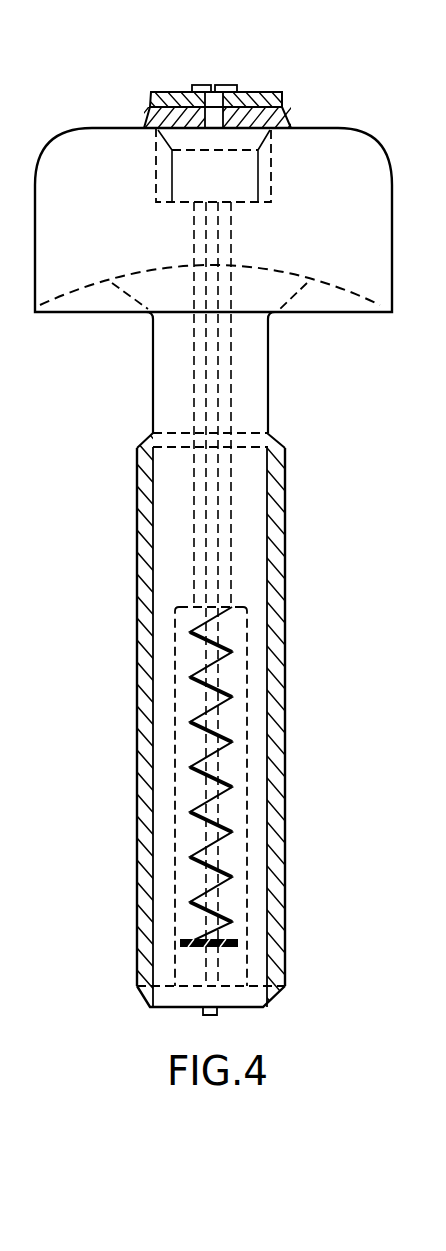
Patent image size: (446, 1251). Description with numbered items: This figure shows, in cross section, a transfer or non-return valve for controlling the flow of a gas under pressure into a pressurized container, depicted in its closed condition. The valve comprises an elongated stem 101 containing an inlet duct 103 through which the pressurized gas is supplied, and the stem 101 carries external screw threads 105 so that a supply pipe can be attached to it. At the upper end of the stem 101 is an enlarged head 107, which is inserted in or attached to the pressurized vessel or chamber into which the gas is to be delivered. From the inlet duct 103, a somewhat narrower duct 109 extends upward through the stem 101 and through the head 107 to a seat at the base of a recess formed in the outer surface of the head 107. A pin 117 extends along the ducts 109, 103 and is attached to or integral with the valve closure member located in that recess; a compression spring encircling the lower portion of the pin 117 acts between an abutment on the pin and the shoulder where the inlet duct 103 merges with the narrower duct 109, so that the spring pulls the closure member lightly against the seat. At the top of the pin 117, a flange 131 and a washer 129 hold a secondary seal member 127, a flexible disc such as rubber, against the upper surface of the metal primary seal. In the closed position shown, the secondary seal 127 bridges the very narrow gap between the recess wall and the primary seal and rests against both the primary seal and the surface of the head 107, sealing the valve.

The stem 101 is at (210, 723).
The inlet duct 103 is at (233, 808).
The external screw threads 105 is at (275, 703).
The head 107 is at (327, 147).
The duct 109 is at (227, 407).
The pin 117 is at (213, 547).
The secondary seal member 127 is at (143, 117).
The washer 129 is at (177, 90).
The flange 131 is at (228, 85).